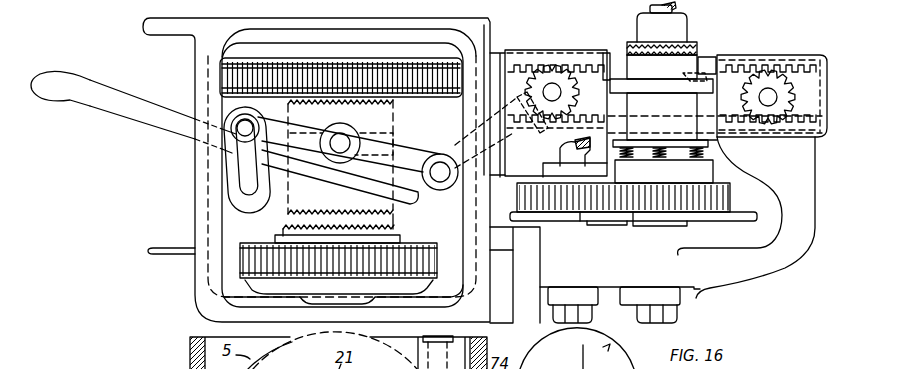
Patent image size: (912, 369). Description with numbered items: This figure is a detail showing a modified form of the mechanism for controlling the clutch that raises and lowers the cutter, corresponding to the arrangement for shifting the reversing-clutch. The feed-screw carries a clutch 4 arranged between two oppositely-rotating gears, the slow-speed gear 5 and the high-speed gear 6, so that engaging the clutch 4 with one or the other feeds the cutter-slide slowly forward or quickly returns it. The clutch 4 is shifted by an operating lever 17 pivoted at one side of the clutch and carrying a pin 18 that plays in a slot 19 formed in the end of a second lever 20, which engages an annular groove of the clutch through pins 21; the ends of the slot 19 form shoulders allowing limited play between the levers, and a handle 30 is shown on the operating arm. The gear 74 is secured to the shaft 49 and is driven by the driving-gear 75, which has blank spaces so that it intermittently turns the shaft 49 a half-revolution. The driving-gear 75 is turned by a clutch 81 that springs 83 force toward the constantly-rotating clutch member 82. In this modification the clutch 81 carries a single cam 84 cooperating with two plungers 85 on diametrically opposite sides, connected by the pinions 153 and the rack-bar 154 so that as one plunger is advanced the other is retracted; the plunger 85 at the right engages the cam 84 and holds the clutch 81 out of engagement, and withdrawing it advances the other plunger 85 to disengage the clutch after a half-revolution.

The operating lever handle 30 is at (82, 94).
The gear 5 is at (313, 60).
The clutch 4 is at (338, 168).
The pin 18 is at (248, 129).
The slot 19 is at (248, 180).
The second lever 20 is at (422, 143).
The pins 21 is at (348, 137).
The lever 17 is at (411, 199).
The gear 6 is at (257, 280).
The pinions 153 is at (545, 63).
The plungers 85 is at (613, 47).
The clutch member 82 is at (677, 33).
The clutch 81 is at (661, 67).
The cam 84 is at (691, 79).
The rack-bar 154 is at (619, 116).
The springs 83 is at (700, 153).
The shaft 49 is at (562, 153).
The gear 74 is at (518, 198).
The driving-gear 75 is at (737, 199).